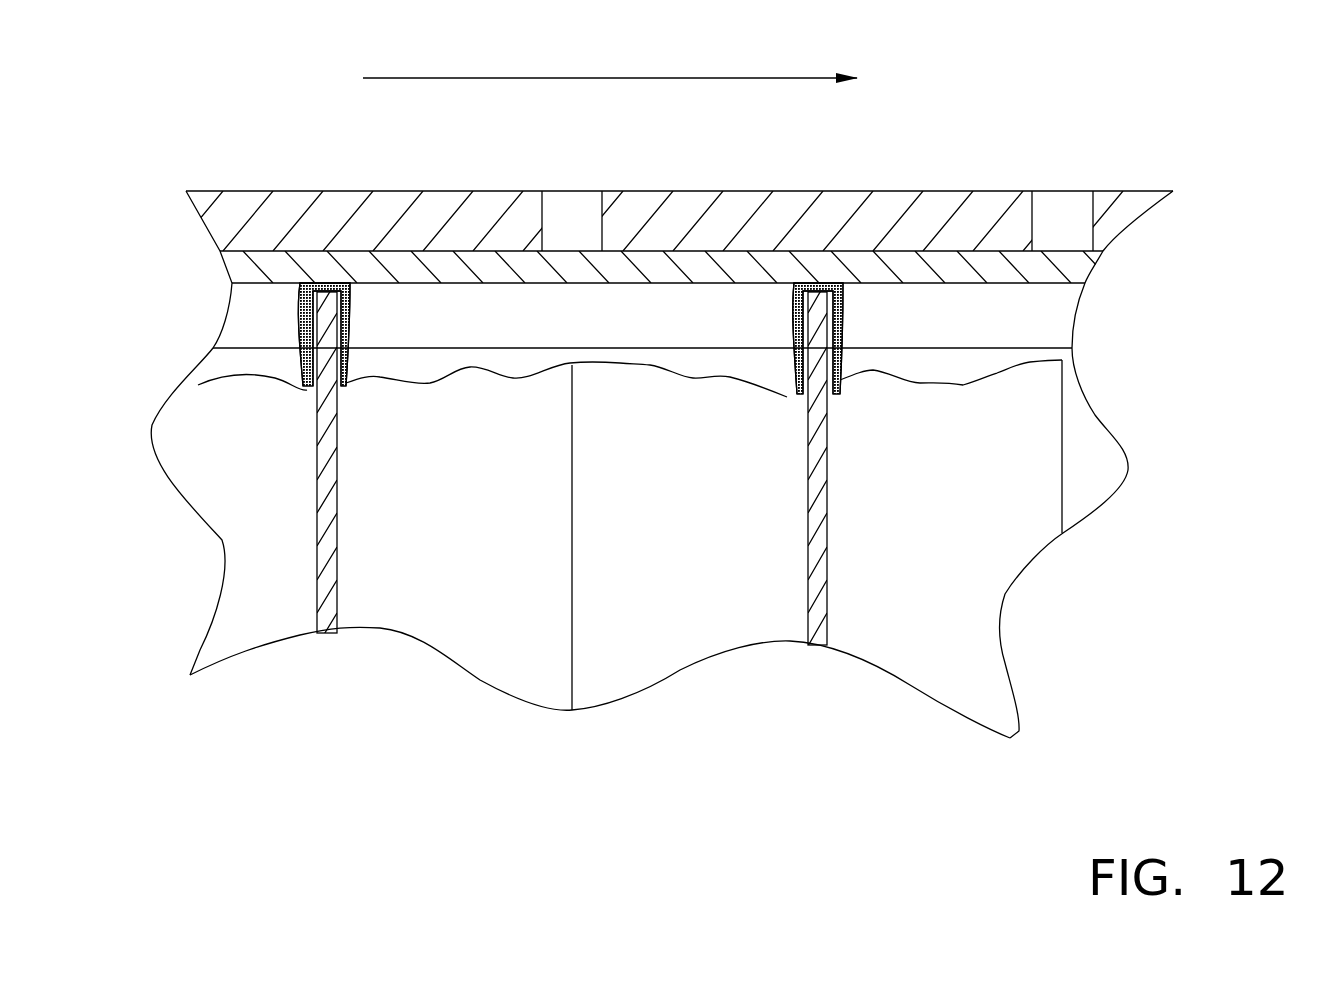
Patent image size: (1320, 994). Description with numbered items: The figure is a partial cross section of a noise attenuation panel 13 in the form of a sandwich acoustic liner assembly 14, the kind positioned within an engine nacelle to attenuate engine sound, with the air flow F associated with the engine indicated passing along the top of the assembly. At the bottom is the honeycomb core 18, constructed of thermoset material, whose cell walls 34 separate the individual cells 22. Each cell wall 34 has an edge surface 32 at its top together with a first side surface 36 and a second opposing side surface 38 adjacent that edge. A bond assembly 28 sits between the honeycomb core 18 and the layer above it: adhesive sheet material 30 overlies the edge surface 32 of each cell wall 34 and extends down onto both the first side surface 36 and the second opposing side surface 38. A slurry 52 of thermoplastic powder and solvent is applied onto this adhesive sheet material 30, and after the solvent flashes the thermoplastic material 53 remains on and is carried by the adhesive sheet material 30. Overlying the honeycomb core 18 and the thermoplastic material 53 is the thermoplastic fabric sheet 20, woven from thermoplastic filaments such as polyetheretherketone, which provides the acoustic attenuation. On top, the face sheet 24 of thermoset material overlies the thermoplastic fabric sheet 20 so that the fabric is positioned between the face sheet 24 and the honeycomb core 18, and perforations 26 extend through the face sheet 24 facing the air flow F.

The noise attenuation panel 13 is at (1120, 125).
The sandwich acoustic liner assembly 14 is at (238, 126).
The honeycomb core 18 is at (452, 590).
The thermoplastic fabric sheet 20 is at (1063, 268).
The cell 22 is at (498, 592).
The face sheet 24 is at (1125, 210).
The perforation 26 is at (570, 205).
The bond assembly 28 is at (333, 283).
The adhesive sheet material 30 is at (218, 368).
The edge surface 32 is at (315, 283).
The cell wall 34 is at (327, 450).
The first side surface 36 is at (337, 430).
The second opposing side surface 38 is at (317, 423).
The slurry 52 is at (352, 320).
The thermoplastic material 53 is at (302, 300).
The air flow F is at (587, 78).